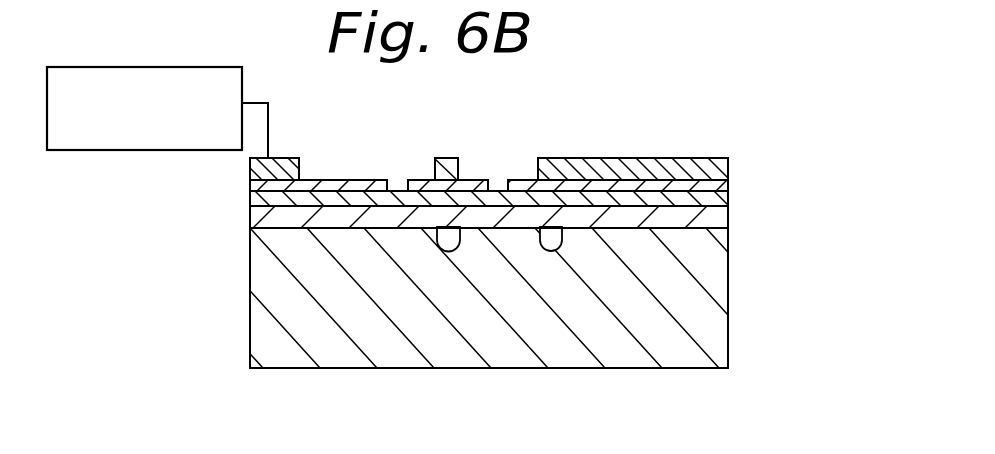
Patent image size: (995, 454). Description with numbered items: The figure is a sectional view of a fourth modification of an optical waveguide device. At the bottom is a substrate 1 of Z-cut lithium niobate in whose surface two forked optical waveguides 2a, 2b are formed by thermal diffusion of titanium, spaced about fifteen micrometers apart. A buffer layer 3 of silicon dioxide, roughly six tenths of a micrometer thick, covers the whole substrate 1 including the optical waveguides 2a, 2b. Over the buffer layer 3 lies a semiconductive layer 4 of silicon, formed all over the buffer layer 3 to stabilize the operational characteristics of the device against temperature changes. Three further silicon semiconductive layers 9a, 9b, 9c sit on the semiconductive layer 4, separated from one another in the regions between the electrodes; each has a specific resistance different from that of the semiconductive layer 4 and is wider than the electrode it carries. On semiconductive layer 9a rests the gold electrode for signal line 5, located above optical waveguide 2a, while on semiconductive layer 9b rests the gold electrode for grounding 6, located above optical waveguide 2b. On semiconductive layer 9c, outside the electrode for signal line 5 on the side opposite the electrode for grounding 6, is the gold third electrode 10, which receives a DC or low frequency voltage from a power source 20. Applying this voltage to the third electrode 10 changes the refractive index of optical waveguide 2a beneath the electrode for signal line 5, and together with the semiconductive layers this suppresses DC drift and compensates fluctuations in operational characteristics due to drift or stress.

The substrate 1 is at (708, 318).
The forked optical waveguide 2a is at (448, 245).
The forked optical waveguide 2b is at (552, 245).
The buffer layer 3 is at (723, 217).
The semiconductive layer 4 is at (721, 199).
The electrode for signal line 5 is at (449, 158).
The electrode for grounding 6 is at (672, 158).
The semiconductive layer 9a is at (418, 180).
The semiconductive layer 9b is at (729, 185).
The semiconductive layer 9c is at (355, 180).
The third electrode 10 is at (292, 157).
The power source 20 is at (125, 150).